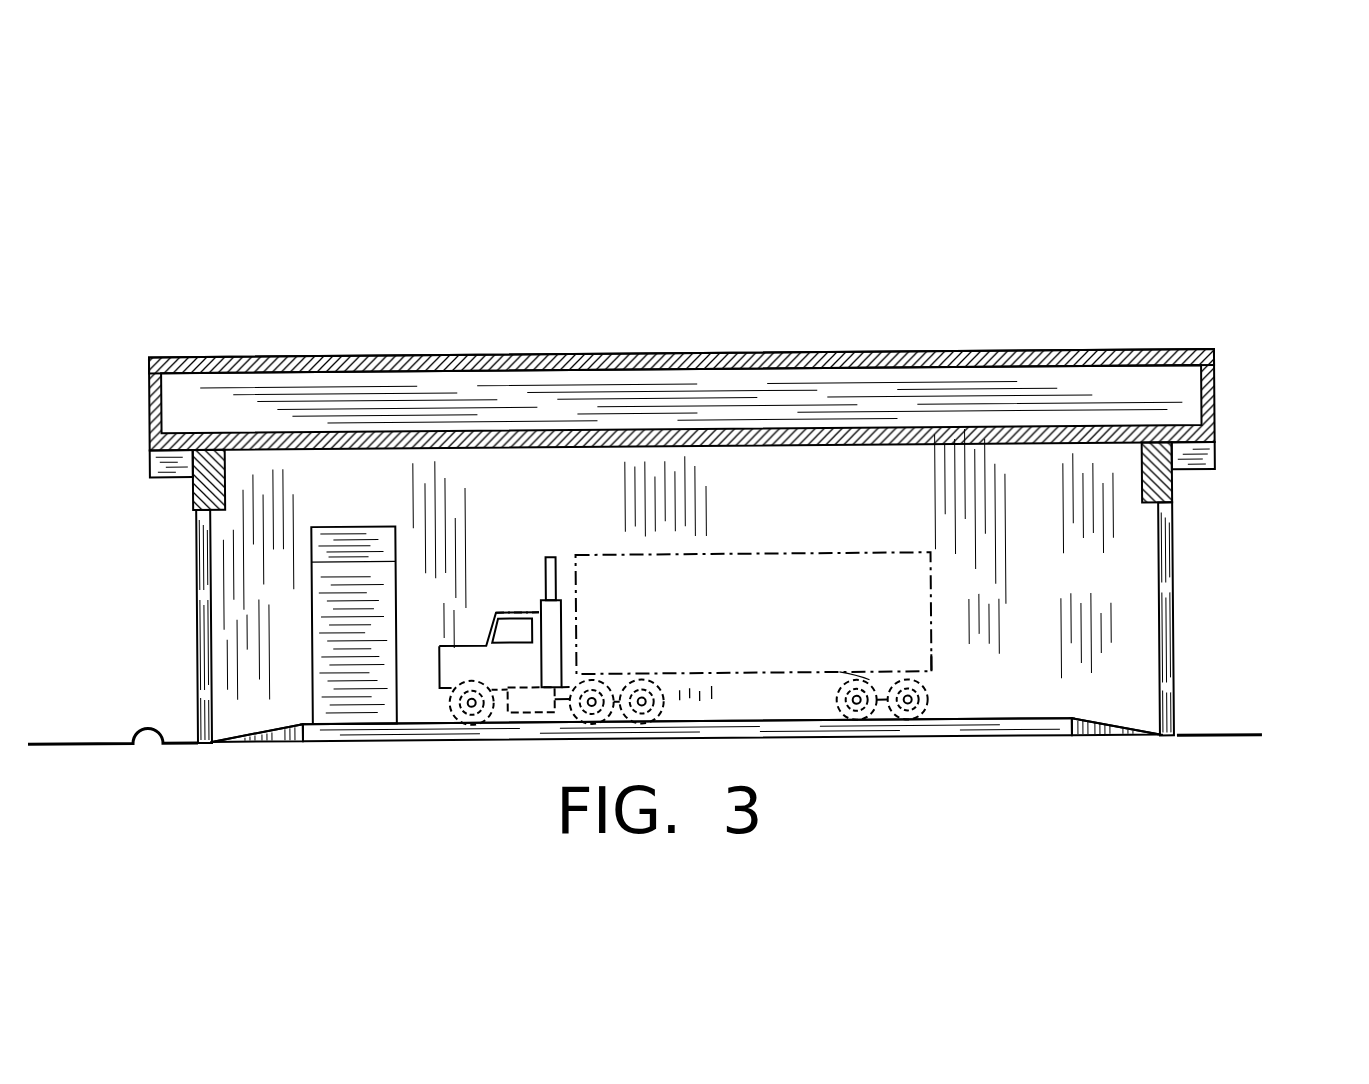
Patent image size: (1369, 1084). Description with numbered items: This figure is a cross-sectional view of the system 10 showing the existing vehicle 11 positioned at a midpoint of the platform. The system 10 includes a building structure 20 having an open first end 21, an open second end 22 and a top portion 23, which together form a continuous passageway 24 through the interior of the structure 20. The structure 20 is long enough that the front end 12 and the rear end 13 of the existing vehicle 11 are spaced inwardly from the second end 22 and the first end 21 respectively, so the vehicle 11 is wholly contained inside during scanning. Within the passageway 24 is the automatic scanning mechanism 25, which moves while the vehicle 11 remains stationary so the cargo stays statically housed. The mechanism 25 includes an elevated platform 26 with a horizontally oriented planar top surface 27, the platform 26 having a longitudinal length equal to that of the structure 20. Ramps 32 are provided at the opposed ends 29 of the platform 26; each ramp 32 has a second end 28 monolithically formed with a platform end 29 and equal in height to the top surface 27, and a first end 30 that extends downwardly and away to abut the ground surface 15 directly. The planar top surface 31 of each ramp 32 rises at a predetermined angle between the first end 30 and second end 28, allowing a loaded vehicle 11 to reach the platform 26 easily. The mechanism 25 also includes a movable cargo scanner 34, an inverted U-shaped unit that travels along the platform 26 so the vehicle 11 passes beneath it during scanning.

The system 10 is at (949, 236).
The existing vehicle 11 is at (786, 597).
The front end 12 is at (462, 648).
The rear end 13 is at (932, 678).
The ground surface 15 is at (137, 746).
The building structure 20 is at (681, 387).
The first end 21 is at (1215, 607).
The second end 22 is at (205, 546).
The top portion 23 is at (800, 360).
The passageway 24 is at (1175, 612).
The automatic scanning mechanism 25 is at (420, 594).
The elevated platform 26 is at (687, 718).
The top surface 27 is at (560, 731).
The second end 28 is at (303, 727).
The opposed ends 29 is at (305, 725).
The first end 30 is at (212, 743).
The planar top surface 31 is at (715, 724).
The ramp 32 is at (257, 737).
The movable cargo scanner 34 is at (403, 561).